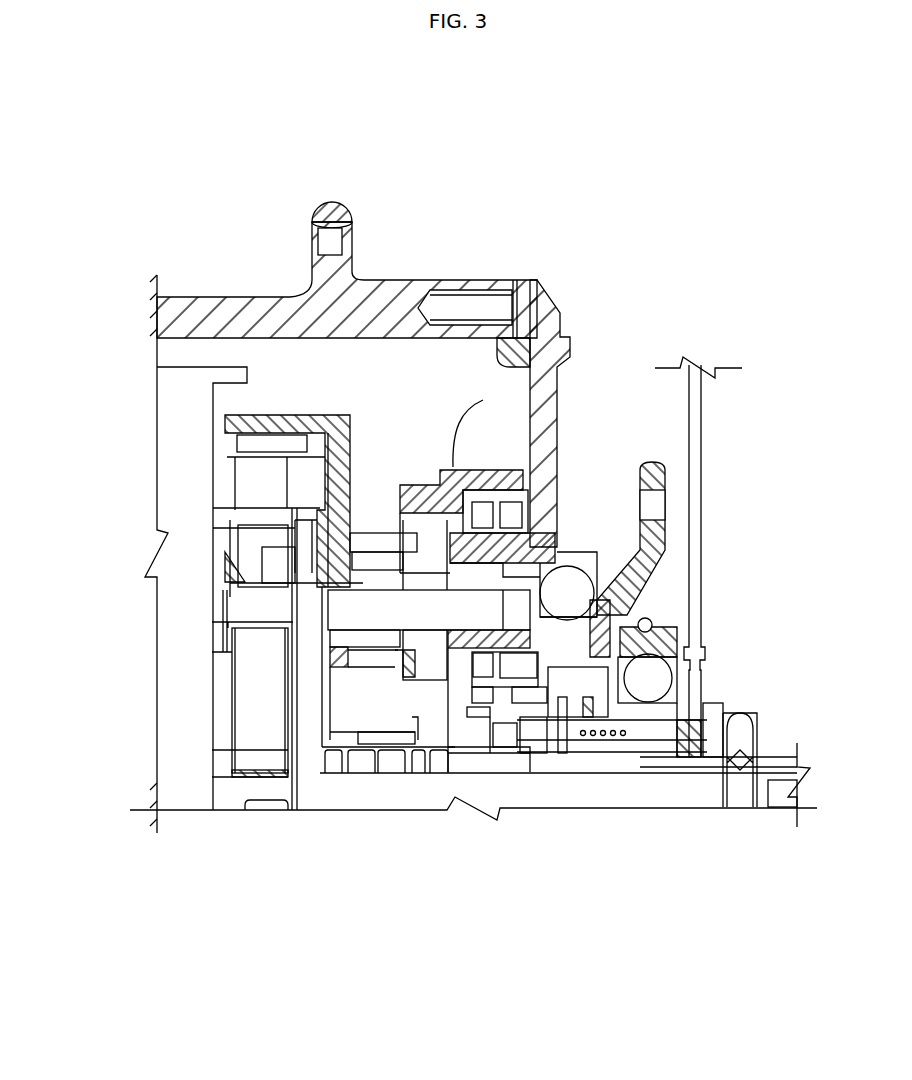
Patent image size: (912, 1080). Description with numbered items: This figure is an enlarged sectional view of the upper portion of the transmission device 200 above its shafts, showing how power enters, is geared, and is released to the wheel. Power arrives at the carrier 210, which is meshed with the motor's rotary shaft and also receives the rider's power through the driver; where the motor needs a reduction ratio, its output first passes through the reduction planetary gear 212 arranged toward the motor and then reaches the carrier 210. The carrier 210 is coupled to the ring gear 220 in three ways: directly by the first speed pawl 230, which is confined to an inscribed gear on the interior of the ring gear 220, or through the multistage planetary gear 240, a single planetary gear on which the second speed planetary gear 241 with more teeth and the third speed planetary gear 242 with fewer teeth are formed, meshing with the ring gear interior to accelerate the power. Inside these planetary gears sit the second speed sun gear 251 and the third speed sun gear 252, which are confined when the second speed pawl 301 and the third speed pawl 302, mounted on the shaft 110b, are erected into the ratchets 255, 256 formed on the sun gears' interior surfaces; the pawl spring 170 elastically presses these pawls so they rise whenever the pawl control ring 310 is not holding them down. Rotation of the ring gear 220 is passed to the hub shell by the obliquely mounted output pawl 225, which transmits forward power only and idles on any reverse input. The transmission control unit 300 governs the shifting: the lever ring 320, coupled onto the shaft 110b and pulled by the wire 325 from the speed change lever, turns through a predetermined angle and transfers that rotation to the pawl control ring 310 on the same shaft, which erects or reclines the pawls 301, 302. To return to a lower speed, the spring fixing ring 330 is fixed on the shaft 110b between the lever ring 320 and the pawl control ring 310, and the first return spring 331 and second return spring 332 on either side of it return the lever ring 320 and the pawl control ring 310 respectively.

The shaft 110b is at (680, 793).
The pawl spring 170 is at (340, 790).
The transmission device 200 is at (400, 378).
The carrier 210 is at (325, 413).
The reduction planetary gear 212 is at (252, 482).
The ring gear 220 is at (462, 425).
The output pawl 225 is at (512, 517).
The first speed pawl 230 is at (327, 532).
The multistage planetary gear 240 is at (239, 683).
The second speed planetary gear 241 is at (425, 677).
The third speed planetary gear 242 is at (285, 590).
The second speed sun gear 251 is at (447, 797).
The third speed sun gear 252 is at (397, 738).
The ratchet 255 is at (427, 763).
The ratchet 256 is at (377, 760).
The transmission control unit 300 is at (587, 777).
The second speed pawl 301 is at (497, 777).
The third speed pawl 302 is at (350, 773).
The pawl control ring 310 is at (530, 777).
The lever ring 320 is at (713, 673).
The wire 325 is at (692, 460).
The spring fixing ring 330 is at (655, 625).
The first return spring 331 is at (610, 777).
The second return spring 332 is at (567, 612).